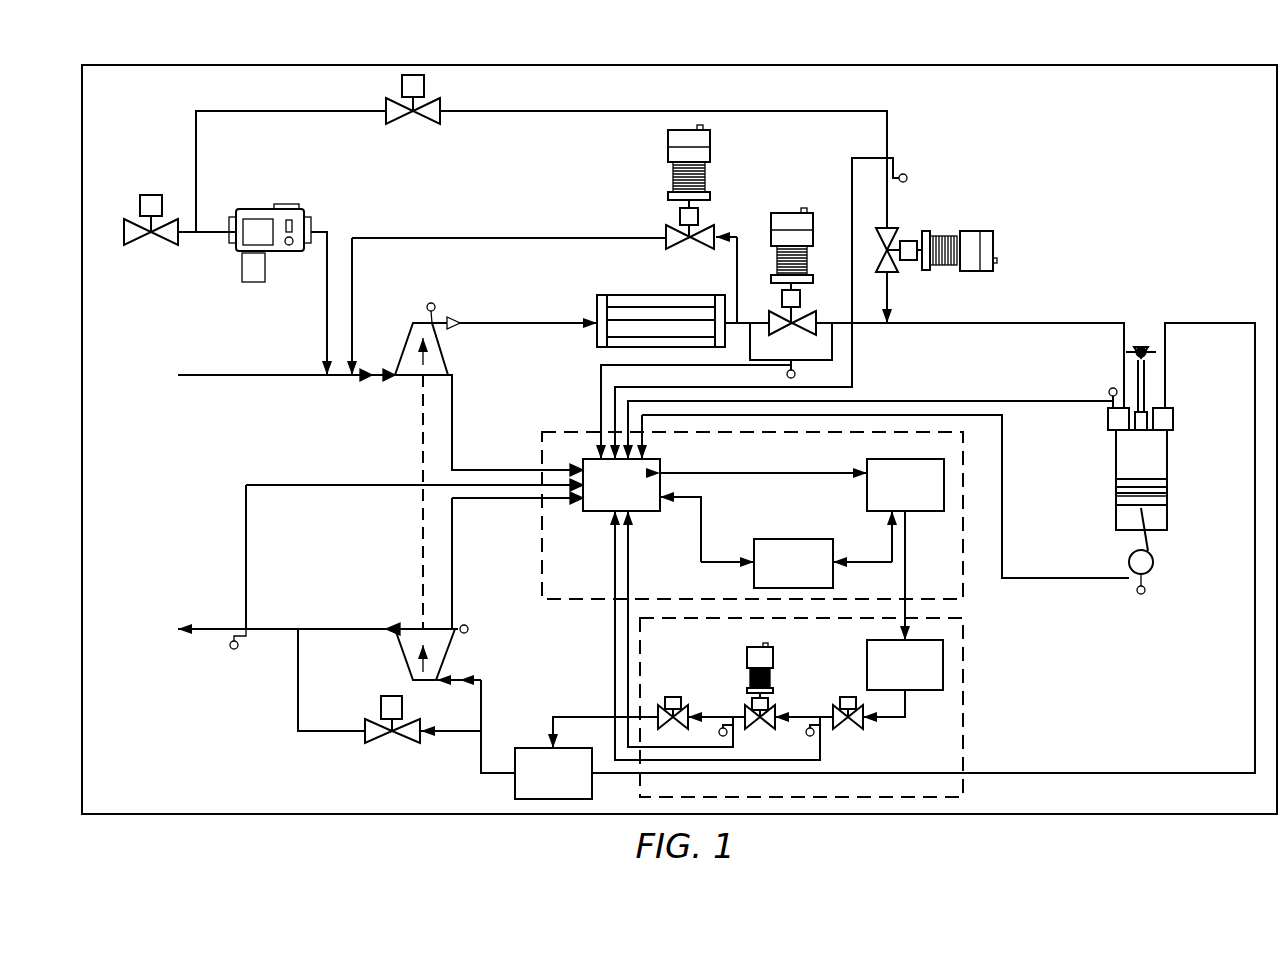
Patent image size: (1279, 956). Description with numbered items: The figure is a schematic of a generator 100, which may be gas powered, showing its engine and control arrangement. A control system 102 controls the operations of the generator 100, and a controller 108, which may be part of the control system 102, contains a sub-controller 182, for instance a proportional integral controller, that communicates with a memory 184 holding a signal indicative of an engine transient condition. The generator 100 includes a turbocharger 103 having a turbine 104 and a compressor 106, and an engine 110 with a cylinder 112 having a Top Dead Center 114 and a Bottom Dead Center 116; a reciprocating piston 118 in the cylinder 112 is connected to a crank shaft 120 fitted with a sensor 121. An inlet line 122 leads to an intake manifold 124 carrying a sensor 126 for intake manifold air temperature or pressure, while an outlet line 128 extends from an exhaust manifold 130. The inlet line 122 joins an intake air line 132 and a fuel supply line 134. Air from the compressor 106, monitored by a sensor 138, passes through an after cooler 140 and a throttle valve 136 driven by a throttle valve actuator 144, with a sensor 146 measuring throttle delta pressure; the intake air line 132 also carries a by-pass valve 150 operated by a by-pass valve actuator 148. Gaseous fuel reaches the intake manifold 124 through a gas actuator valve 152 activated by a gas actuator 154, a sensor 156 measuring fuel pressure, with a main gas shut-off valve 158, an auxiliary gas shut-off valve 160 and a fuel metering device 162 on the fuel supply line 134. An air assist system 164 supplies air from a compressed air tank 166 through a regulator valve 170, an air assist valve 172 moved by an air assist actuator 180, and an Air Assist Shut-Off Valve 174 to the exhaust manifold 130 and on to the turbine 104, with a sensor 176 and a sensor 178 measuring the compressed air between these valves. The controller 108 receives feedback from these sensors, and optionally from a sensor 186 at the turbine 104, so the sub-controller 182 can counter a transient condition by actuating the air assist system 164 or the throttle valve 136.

The generator 100 is at (1040, 52).
The control system 102 is at (794, 527).
The turbocharger 103 is at (392, 657).
The turbine 104 is at (442, 659).
The compressor 106 is at (402, 348).
The controller 108 is at (621, 485).
The engine 110 is at (949, 490).
The cylinder 112 is at (1114, 456).
The Top Dead Center 114 is at (1172, 436).
The Bottom Dead Center 116 is at (1168, 517).
The reciprocating piston 118 is at (1120, 500).
The crank shaft 120 is at (1150, 541).
The sensor 121 is at (1146, 594).
The inlet line 122 is at (1060, 321).
The intake manifold 124 is at (1106, 419).
The sensor 126 is at (1110, 390).
The outlet line 128 is at (1254, 693).
The exhaust manifold 130 is at (1168, 410).
The intake air line 132 is at (492, 321).
The fuel supply line 134 is at (518, 114).
The throttle valve 136 is at (806, 308).
The sensor 138 is at (435, 304).
The after cooler 140 is at (628, 294).
The throttle valve actuator 144 is at (785, 210).
The sensor 146 is at (796, 374).
The by-pass valve actuator 148 is at (665, 150).
The by-pass valve 150 is at (667, 233).
The gas actuator valve 152 is at (893, 227).
The gas actuator 154 is at (987, 230).
The sensor 156 is at (905, 176).
The main gas shut-off valve 158 is at (134, 217).
The auxiliary gas shut-off valve 160 is at (402, 127).
The fuel metering device 162 is at (262, 207).
The air assist system 164 is at (800, 654).
The compressed air tank 166 is at (905, 600).
The regulator valve 170 is at (846, 694).
The air assist valve 172 is at (770, 710).
The Air Assist Shut-Off Valve 174 is at (672, 696).
The sensor 176 is at (816, 735).
The sensor 178 is at (729, 735).
The air assist actuator 180 is at (746, 658).
The sub-controller 182 is at (905, 485).
The memory 184 is at (793, 563).
The sensor 186 is at (468, 625).